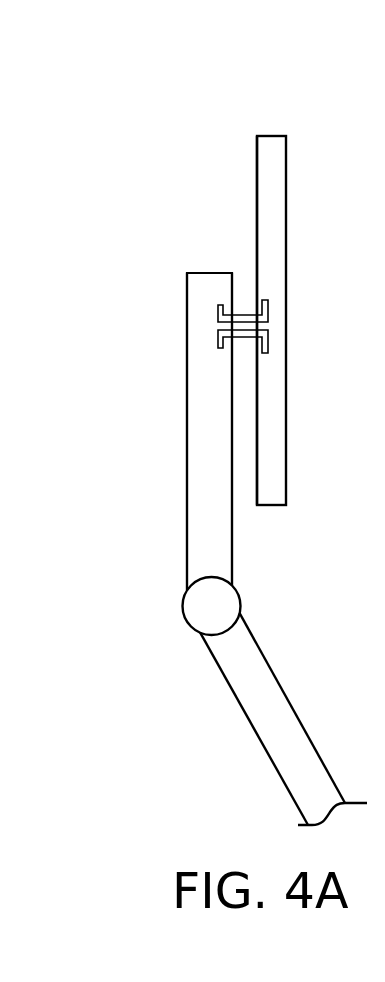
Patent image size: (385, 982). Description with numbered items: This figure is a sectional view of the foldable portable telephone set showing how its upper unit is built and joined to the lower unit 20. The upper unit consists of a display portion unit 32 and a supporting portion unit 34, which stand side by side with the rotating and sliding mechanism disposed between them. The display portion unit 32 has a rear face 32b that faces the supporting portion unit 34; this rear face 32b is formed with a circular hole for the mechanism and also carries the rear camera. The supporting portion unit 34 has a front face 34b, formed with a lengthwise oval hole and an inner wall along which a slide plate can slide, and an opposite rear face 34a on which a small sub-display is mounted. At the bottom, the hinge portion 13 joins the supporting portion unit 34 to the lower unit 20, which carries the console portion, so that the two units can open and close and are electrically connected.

The display portion unit 32 is at (286, 155).
The rear face of display portion unit 32b is at (257, 158).
The supporting portion unit 34 is at (187, 402).
The rear face of supporting portion unit 34a is at (187, 507).
The front face of supporting portion unit 34b is at (232, 535).
The hinge portion 13 is at (191, 627).
The lower unit 20 is at (272, 762).